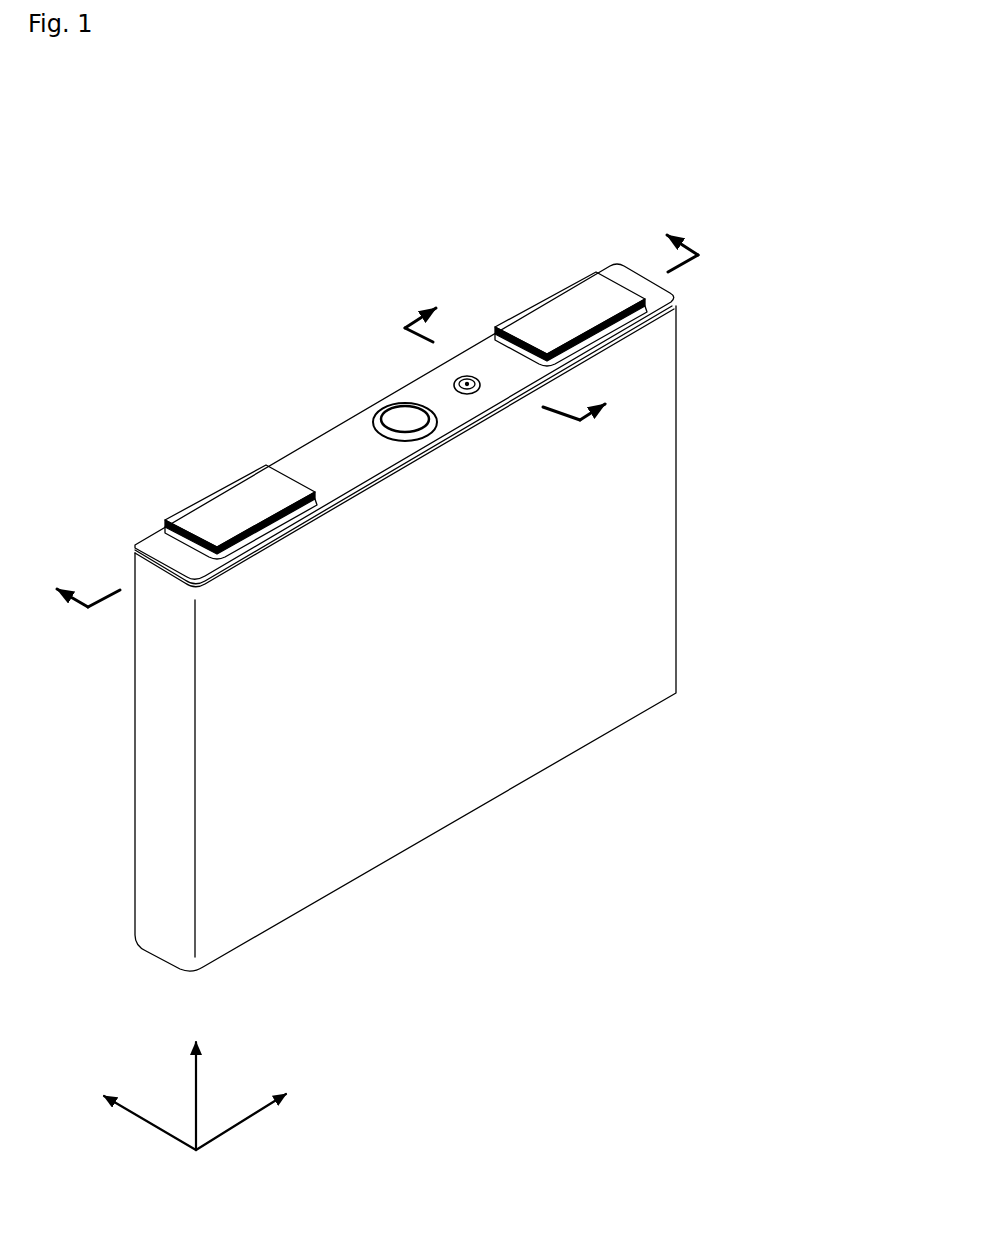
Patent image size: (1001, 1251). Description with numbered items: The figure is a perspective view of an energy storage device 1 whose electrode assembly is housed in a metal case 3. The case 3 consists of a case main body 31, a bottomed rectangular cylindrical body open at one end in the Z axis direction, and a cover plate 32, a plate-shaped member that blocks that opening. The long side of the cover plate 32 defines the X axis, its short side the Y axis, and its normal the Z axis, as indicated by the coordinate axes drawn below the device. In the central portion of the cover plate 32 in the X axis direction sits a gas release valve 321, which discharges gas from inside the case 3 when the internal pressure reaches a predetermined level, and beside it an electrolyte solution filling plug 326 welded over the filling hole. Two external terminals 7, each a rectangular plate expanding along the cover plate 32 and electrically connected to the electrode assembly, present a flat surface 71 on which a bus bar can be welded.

The energy storage device 1 is at (443, 613).
The case 3 is at (493, 617).
The case main body 31 is at (652, 484).
The cover plate 32 is at (664, 294).
The gas release valve 321 is at (383, 407).
The electrolyte solution filling plug 326 is at (455, 383).
The external terminal 7 is at (400, 389).
The surface 71 is at (255, 490).